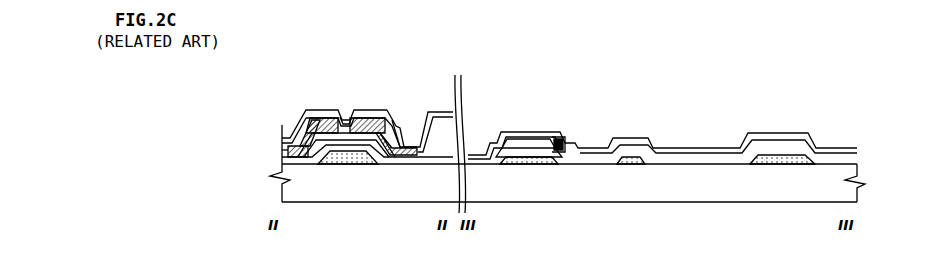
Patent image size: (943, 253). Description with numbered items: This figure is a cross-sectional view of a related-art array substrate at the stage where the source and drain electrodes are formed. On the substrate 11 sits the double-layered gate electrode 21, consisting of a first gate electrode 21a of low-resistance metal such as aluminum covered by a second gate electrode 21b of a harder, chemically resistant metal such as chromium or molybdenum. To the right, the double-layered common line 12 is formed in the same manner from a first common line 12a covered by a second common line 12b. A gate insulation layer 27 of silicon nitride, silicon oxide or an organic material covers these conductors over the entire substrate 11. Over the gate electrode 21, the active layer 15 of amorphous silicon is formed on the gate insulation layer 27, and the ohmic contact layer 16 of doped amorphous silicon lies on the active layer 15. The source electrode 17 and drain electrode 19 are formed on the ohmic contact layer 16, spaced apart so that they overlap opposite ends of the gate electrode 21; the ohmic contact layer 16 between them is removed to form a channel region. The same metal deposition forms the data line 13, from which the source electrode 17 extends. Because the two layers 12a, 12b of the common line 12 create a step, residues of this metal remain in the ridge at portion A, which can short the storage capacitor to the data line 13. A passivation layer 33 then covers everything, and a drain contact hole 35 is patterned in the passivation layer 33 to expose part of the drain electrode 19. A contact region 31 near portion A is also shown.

The substrate 11 is at (608, 189).
The common line 12 is at (529, 114).
The first common line 12a is at (530, 150).
The second common line 12b is at (515, 147).
The data line 13 is at (280, 147).
The active layer 15 is at (344, 113).
The ohmic contact layer 16 is at (387, 118).
The source electrode 17 is at (347, 150).
The drain electrode 19 is at (362, 120).
The gate electrode 21 is at (298, 106).
The first gate electrode 21a is at (313, 118).
The second gate electrode 21b is at (297, 147).
The gate insulation layer 27 is at (440, 148).
The contact hole 31 is at (556, 139).
The passivation layer 33 is at (385, 112).
The drain contact hole 35 is at (408, 124).
The portion A is at (563, 137).